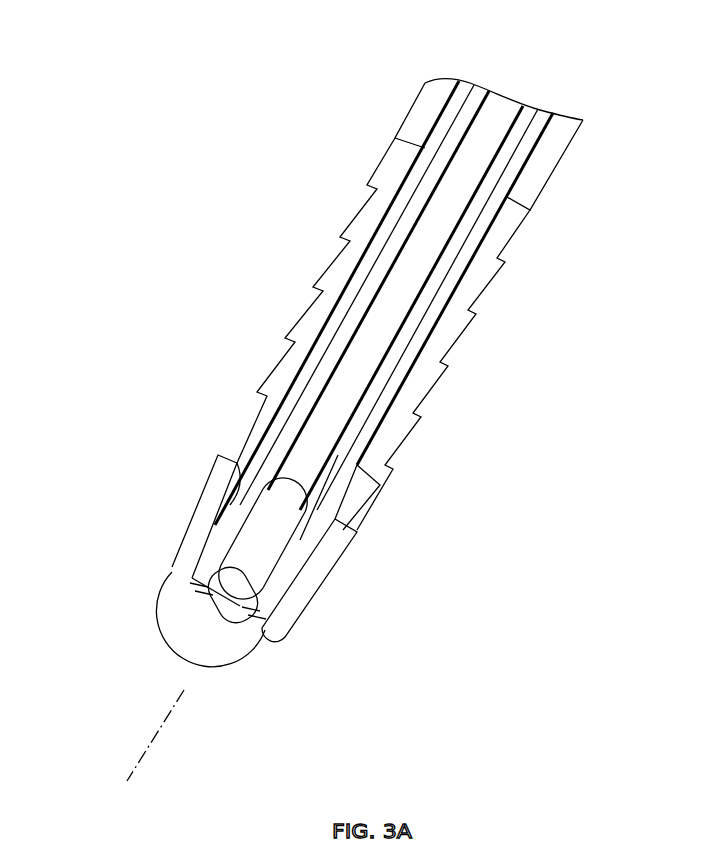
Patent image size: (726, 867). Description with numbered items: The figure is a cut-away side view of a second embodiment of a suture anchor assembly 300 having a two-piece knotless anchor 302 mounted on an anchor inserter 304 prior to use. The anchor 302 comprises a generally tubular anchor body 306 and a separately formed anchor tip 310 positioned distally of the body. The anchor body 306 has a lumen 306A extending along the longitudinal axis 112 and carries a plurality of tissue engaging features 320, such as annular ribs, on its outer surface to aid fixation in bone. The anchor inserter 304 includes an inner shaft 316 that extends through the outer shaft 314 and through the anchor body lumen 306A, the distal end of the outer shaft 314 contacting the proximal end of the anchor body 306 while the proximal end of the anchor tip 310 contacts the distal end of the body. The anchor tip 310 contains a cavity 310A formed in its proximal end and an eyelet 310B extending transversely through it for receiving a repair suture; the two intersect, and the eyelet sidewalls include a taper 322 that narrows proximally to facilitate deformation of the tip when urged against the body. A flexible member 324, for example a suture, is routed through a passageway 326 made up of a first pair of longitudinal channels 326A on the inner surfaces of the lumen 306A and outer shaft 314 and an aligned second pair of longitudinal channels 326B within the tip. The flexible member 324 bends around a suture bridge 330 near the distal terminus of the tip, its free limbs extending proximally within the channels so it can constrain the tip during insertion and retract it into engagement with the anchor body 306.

The suture anchor assembly 300 is at (152, 208).
The anchor 302 is at (261, 387).
The anchor inserter 304 is at (427, 112).
The anchor body 306 is at (297, 335).
The anchor body lumen 306A is at (503, 113).
The anchor tip 310 is at (293, 637).
The cavity 310A is at (340, 524).
The eyelet 310B is at (261, 539).
The outer shaft 314 is at (548, 152).
The inner shaft 316 is at (367, 359).
The tissue engaging features 320 is at (505, 228).
The taper 322 is at (220, 472).
The flexible member 324 is at (345, 464).
The passageway 326 is at (397, 391).
The first pair of longitudinal channels 326A is at (413, 177).
The second pair of longitudinal channels 326B is at (185, 572).
The suture bridge 330 is at (240, 592).
The longitudinal axis 112 is at (140, 748).